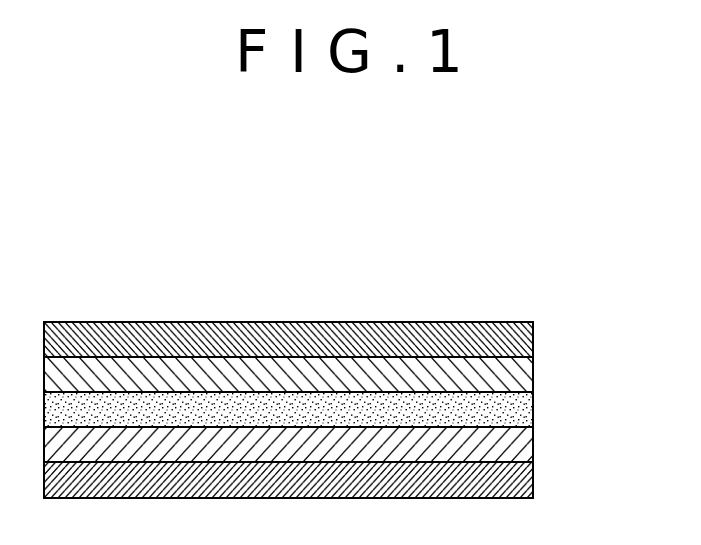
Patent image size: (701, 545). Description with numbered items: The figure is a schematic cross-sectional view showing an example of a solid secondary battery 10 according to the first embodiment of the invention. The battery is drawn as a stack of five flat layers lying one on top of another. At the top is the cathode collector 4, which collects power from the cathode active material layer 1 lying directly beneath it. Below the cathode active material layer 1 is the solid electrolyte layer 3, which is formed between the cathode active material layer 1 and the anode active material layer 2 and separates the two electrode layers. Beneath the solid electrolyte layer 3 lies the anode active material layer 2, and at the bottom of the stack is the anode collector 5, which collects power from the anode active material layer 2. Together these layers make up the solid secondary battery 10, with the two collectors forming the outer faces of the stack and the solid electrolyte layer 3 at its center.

The solid secondary battery 10 is at (534, 292).
The cathode collector 4 is at (513, 341).
The cathode active material layer 1 is at (513, 377).
The solid electrolyte layer 3 is at (513, 411).
The anode active material layer 2 is at (513, 446).
The anode collector 5 is at (513, 481).